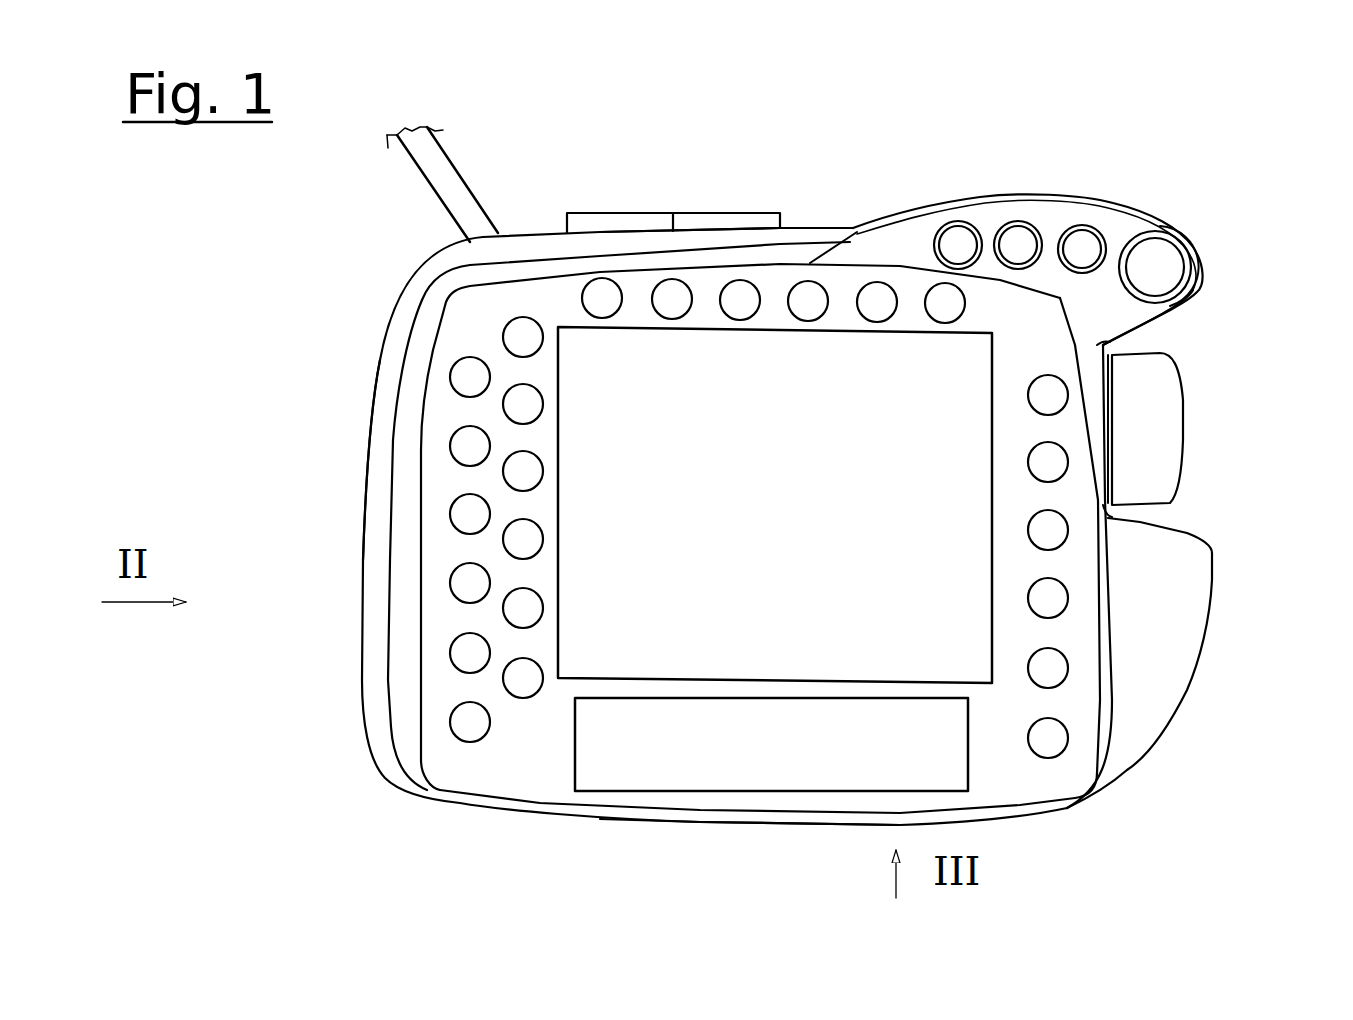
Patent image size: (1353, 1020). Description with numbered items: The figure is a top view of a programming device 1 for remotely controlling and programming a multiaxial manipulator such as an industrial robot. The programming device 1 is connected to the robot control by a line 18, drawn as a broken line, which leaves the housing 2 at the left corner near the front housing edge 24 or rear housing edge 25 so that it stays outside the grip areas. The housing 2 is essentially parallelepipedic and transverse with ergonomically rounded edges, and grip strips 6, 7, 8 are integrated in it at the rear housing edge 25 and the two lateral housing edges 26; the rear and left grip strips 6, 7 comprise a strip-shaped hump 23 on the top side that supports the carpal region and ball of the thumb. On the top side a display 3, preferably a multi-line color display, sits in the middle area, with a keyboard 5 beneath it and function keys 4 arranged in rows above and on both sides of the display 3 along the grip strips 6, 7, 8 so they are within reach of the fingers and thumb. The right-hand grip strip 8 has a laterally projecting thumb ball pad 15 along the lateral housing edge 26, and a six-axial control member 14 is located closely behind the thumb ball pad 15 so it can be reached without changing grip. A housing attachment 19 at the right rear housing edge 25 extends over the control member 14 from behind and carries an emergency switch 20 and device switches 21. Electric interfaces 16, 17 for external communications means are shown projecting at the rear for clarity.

The programming device 1 is at (920, 208).
The housing 2 is at (407, 300).
The display 3 is at (775, 505).
The function keys 4 is at (603, 298).
The keyboard 5 is at (771, 744).
The grip strip 6 is at (642, 240).
The grip strip 7 is at (390, 466).
The grip strip 8 is at (1092, 553).
The control member 14 is at (1148, 397).
The thumb ball pad 15 is at (1158, 602).
The electric interface 16 is at (595, 222).
The electric interface 17 is at (740, 223).
The line 18 is at (420, 157).
The housing attachment 19 is at (1062, 218).
The emergency switch 20 is at (1163, 263).
The device switch 21 is at (1013, 237).
The hump 23 is at (680, 257).
The front housing edge 24 is at (682, 840).
The rear housing edge 25 is at (828, 218).
The lateral housing edge 26 is at (1212, 339).